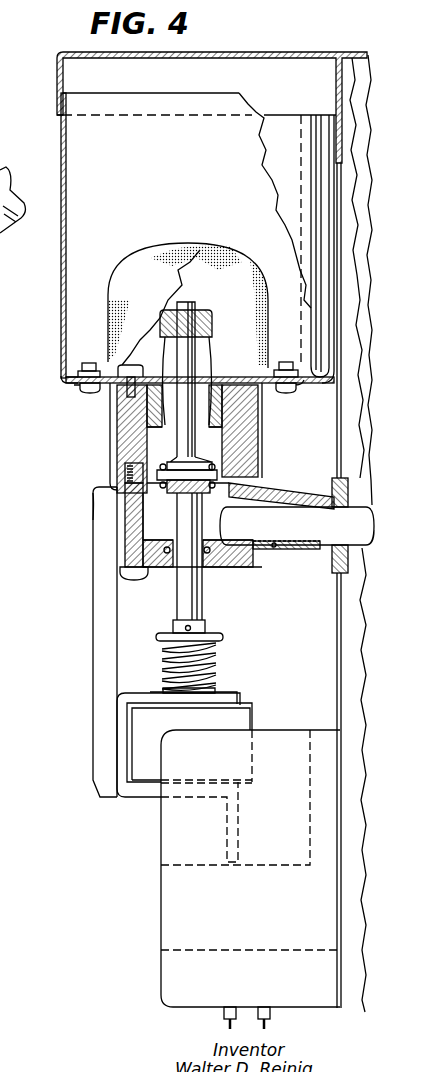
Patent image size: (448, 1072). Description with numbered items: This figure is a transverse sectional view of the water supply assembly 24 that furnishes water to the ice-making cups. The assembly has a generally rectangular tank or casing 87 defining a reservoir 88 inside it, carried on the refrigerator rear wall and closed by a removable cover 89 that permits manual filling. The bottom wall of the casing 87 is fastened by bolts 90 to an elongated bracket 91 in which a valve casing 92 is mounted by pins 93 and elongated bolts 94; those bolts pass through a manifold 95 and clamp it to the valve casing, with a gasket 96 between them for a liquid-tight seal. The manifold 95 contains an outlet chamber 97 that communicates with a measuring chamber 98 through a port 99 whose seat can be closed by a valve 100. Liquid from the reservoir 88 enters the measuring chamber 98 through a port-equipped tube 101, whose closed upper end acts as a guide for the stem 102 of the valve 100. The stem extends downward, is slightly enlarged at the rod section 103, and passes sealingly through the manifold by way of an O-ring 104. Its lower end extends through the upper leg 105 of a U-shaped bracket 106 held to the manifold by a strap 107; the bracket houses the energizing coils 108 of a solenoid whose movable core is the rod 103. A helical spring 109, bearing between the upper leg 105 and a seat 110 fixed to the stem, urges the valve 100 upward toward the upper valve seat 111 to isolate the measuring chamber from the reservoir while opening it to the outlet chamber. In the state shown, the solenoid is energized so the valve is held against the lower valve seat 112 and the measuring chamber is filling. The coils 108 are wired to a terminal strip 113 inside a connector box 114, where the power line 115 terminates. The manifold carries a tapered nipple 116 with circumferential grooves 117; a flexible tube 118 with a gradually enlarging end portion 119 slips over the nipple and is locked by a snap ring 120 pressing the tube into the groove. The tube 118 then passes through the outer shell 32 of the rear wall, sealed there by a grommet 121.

The supply assembly 24 is at (237, 48).
The outer shell 32 is at (337, 421).
The tank or casing 87 is at (60, 300).
The reservoir 88 is at (90, 153).
The removable cover 89 is at (57, 82).
The bolts 90 is at (82, 393).
The elongated bracket 91 is at (110, 447).
The valve casing 92 is at (118, 455).
The pins 93 is at (112, 376).
The elongated bolts 94 is at (118, 573).
The manifold 95 is at (117, 543).
The gasket 96 is at (95, 497).
The outlet chamber 97 is at (154, 573).
The measuring chamber 98 is at (219, 432).
The port 99 is at (210, 497).
The valve 100 is at (212, 444).
The port-equipped tube 101 is at (212, 327).
The stem 102 is at (192, 302).
The enlarged rod section 103 is at (195, 598).
The O-ring 104 is at (255, 566).
The upper leg 105 is at (226, 697).
The U-shaped bracket 106 is at (125, 737).
The strap 107 is at (95, 704).
The energizing coils 108 is at (233, 722).
The helical spring 109 is at (222, 661).
The seat 110 is at (217, 635).
The upper valve seat 111 is at (153, 433).
The lower valve seat 112 is at (151, 548).
The terminal strip 113 is at (213, 957).
The connector box 114 is at (170, 913).
The power line 115 is at (260, 1007).
The tapered nipple 116 is at (318, 550).
The circumferential grooves 117 is at (302, 498).
The flexible tube 118 is at (335, 516).
The enlarging end portion 119 is at (309, 550).
The snap ring 120 is at (212, 465).
The grommet 121 is at (334, 480).